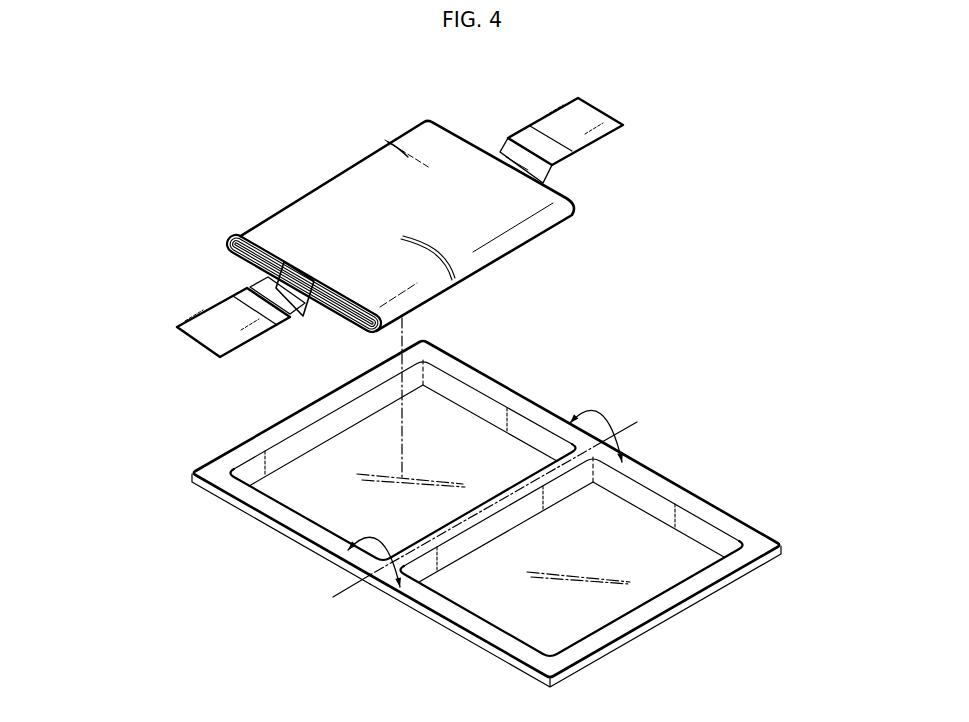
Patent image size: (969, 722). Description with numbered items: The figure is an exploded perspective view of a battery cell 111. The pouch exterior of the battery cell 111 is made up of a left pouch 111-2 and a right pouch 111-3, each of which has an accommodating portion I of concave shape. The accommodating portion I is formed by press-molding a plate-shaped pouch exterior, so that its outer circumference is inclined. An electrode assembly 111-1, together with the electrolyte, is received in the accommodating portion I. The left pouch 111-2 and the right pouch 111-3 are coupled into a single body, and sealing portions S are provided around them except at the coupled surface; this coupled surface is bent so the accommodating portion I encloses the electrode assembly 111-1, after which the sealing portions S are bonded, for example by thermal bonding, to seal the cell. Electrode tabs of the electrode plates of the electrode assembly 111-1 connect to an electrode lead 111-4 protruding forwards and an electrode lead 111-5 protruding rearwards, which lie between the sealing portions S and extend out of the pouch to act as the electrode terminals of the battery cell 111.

The battery cell 111 is at (305, 124).
The electrode assembly 111-1 is at (303, 204).
The left pouch 111-2 is at (487, 385).
The right pouch 111-3 is at (686, 500).
The electrode lead 111-4 is at (219, 317).
The electrode lead 111-5 is at (550, 128).
The sealing portion S is at (210, 473).
The accommodating portion I is at (313, 458).